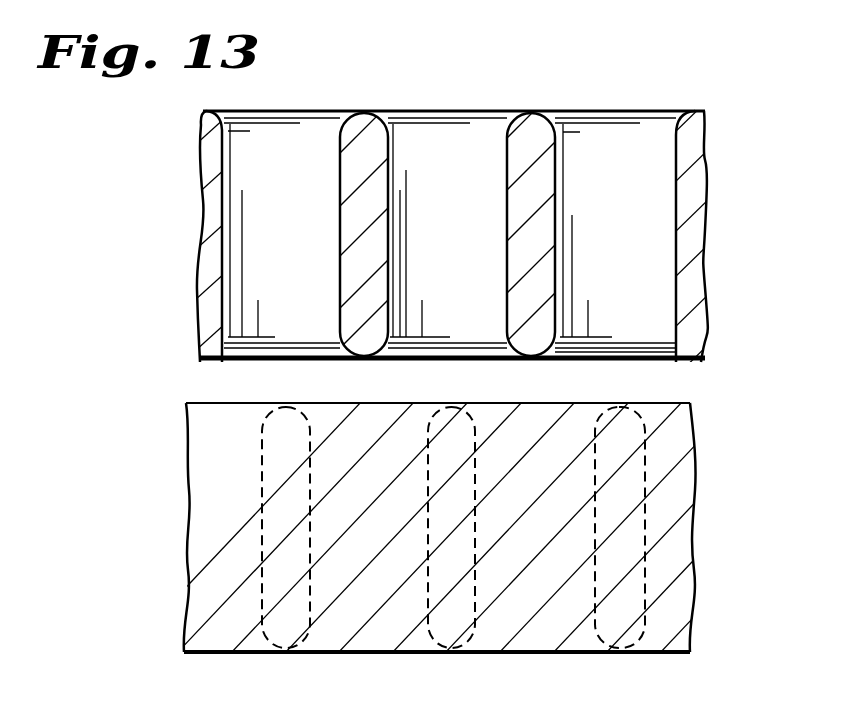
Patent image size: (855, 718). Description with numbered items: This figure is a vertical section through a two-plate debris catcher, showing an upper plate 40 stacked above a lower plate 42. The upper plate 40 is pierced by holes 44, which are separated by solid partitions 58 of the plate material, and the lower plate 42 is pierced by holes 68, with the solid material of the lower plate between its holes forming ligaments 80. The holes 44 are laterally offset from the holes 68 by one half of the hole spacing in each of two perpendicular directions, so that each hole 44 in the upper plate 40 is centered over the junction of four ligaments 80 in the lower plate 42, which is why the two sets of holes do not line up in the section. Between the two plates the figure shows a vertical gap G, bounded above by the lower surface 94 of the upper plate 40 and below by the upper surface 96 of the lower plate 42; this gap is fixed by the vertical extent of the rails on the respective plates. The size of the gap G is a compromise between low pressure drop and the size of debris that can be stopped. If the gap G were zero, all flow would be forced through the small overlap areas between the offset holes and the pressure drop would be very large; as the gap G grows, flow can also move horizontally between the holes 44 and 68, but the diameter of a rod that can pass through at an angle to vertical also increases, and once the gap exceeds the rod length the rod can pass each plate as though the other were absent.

The upper plate 40 is at (452, 212).
The holes 44 is at (307, 140).
The rib / partition wall 58 is at (376, 252).
The lower surface 94 is at (596, 362).
The vertical gap G is at (680, 378).
The holes 68 is at (480, 524).
The upper surface 96 is at (506, 410).
The ligaments 80 is at (303, 549).
The lower plate 42 is at (660, 654).